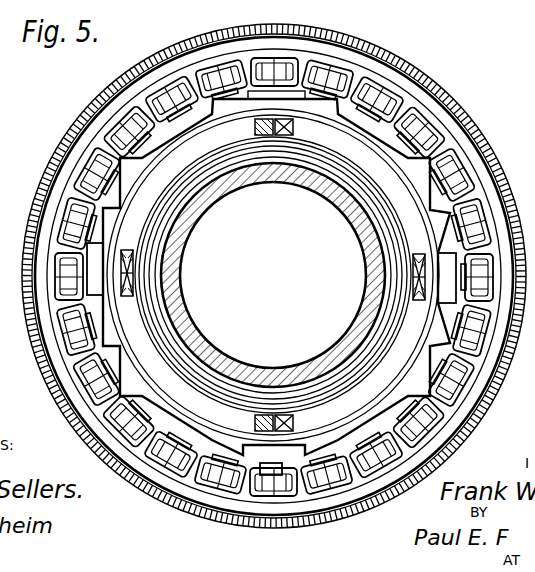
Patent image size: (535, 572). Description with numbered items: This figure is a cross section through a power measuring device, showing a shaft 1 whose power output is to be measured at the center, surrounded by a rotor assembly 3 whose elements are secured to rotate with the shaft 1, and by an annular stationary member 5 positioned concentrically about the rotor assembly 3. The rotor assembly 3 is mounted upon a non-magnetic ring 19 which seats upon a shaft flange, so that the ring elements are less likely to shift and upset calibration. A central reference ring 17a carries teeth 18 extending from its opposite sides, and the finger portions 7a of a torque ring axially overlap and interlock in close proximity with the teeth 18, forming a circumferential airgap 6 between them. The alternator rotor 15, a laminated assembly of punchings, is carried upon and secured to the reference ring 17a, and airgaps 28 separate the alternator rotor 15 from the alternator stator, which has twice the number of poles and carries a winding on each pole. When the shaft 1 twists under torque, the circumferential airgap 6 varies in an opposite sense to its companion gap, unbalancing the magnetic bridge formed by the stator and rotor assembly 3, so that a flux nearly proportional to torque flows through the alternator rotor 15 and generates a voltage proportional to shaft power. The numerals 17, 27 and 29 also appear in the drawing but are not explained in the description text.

The shaft 1 is at (204, 204).
The rotor assembly 3 is at (402, 164).
The annular stationary member 5 is at (508, 136).
The circumferential airgap 6 is at (122, 274).
The finger portion 7a is at (122, 289).
The alternator rotor 15 is at (303, 93).
The sleeve 17 is at (413, 185).
The central reference ring 17a is at (413, 242).
The teeth 18 is at (122, 257).
The non-magnetic ring 19 is at (307, 148).
The coil core 27 is at (216, 94).
The airgap 28 is at (150, 135).
The field coils 29 is at (192, 68).